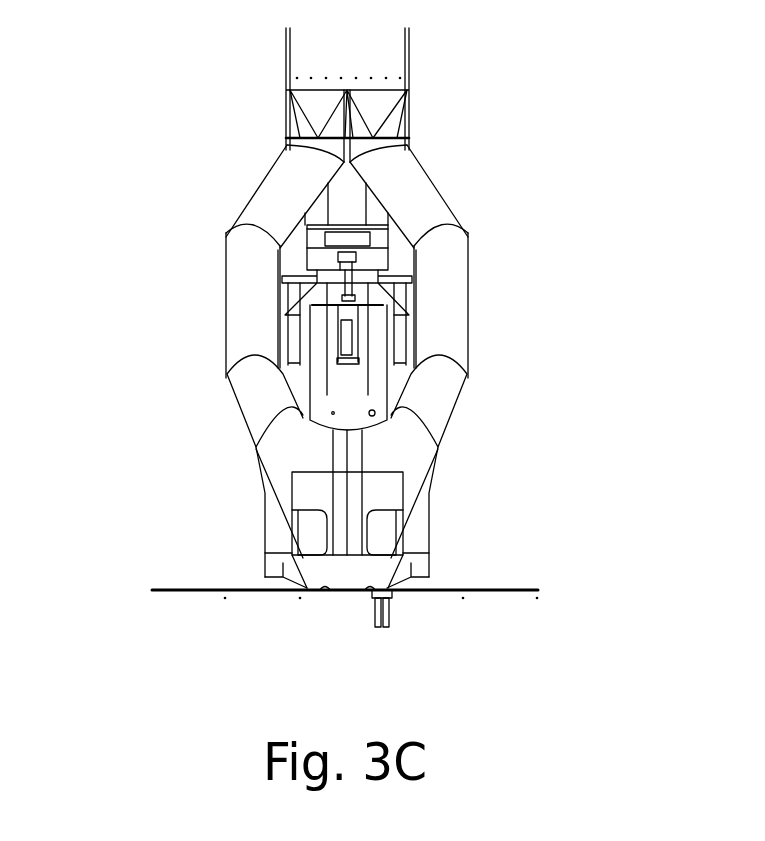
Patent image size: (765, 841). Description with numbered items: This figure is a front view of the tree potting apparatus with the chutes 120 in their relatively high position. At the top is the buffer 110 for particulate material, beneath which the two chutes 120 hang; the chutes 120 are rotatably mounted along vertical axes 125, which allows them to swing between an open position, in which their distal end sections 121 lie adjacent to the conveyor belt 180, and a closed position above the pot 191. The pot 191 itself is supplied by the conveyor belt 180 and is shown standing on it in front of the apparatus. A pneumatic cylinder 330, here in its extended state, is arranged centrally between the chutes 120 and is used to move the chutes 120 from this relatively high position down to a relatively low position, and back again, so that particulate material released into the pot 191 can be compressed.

The buffer 110 is at (345, 50).
The chutes 120 is at (427, 210).
The distal end sections 121 is at (290, 447).
The vertical axes 125 is at (320, 296).
The pneumatic cylinder 330 is at (349, 340).
The conveyor belt 180 is at (513, 588).
The pot 191 is at (347, 573).